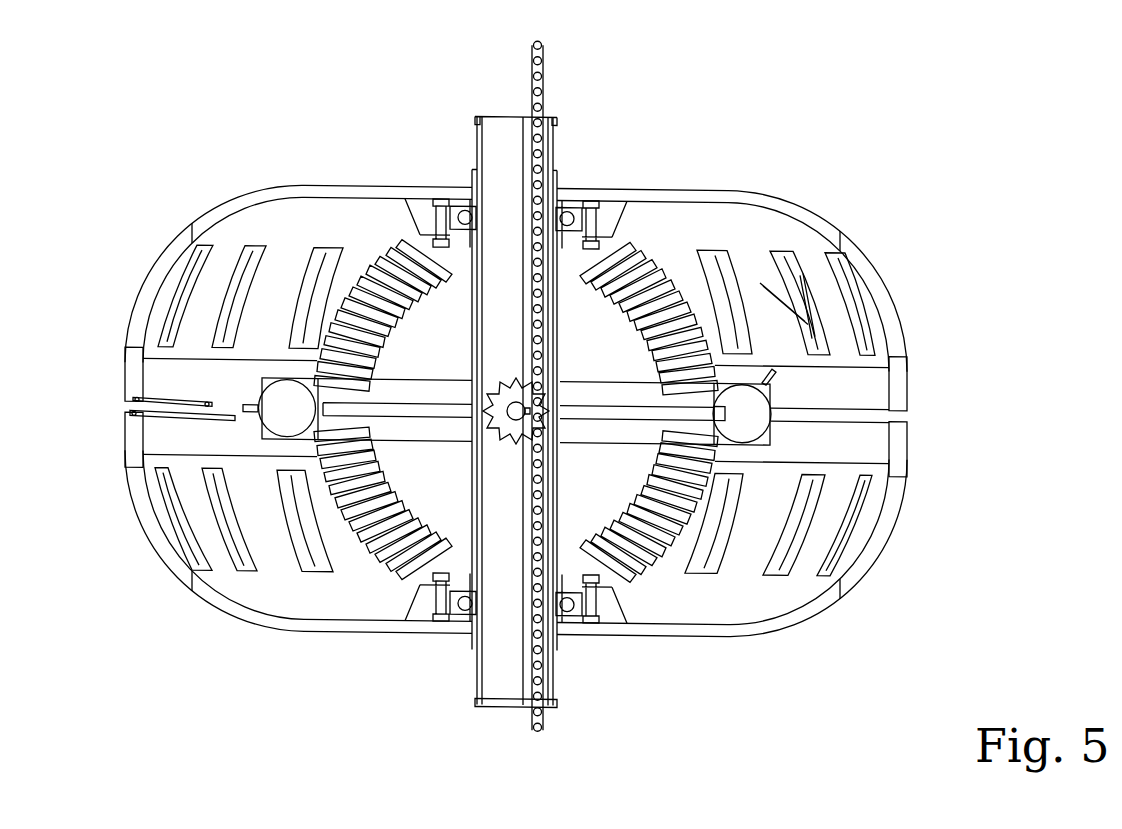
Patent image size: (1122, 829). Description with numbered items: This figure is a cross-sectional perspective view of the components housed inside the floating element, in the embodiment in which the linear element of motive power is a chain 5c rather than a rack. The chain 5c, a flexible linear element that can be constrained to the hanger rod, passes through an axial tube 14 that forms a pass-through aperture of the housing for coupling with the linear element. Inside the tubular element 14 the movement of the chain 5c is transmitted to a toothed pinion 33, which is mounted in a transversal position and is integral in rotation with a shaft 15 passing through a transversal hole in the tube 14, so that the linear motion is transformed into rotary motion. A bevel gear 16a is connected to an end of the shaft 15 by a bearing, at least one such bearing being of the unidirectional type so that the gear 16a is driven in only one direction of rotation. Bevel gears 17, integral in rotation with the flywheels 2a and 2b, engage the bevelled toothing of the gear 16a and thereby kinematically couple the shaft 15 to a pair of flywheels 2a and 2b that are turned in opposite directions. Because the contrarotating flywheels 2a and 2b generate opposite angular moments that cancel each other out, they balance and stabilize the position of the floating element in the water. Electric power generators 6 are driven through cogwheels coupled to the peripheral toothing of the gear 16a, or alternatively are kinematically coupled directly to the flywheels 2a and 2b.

The flywheel 2a is at (762, 228).
The flywheel 2b is at (260, 583).
The chain 5c is at (545, 92).
The electric power generator 6 is at (283, 408).
The axial tube 14 is at (478, 665).
The shaft 15 is at (512, 430).
The bevel gear 16a is at (453, 361).
The bevel gear 17 is at (425, 205).
The toothed pinion 33 is at (516, 393).